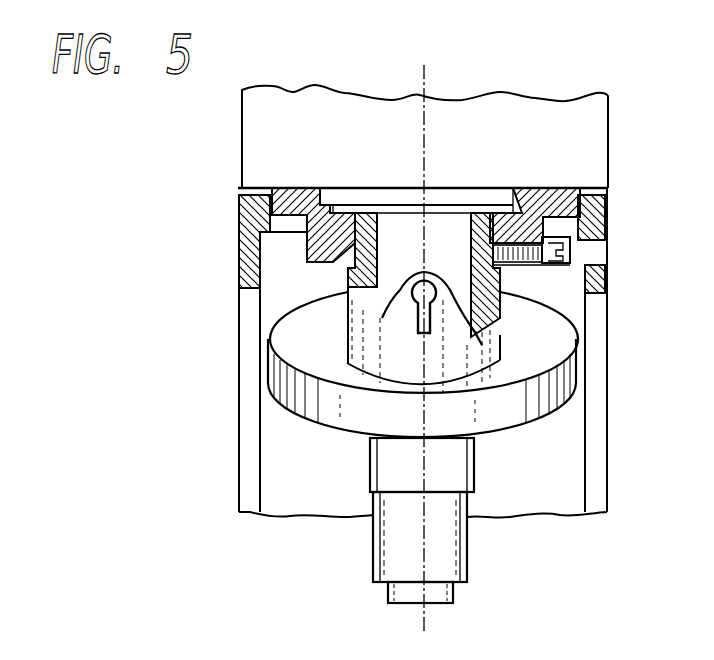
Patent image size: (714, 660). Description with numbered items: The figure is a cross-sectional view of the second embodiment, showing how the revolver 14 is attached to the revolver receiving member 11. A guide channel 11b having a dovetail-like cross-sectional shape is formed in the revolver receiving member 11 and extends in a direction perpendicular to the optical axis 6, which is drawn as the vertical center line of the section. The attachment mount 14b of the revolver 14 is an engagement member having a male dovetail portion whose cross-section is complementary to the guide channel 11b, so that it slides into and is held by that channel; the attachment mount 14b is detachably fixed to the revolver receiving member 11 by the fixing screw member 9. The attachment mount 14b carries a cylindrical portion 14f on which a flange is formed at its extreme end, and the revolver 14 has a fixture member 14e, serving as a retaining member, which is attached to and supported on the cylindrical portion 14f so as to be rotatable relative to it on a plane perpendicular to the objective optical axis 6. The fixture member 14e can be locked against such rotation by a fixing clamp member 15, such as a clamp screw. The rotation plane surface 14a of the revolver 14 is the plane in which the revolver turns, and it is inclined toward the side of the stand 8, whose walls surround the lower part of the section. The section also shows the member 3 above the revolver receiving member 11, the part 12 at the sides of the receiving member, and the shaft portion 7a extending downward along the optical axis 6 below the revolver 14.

The panel / mounting plate 3 is at (460, 100).
The optical axis 6 is at (415, 612).
The shaft 7a is at (457, 553).
The stand 8 is at (292, 500).
The fixing screw member 9 is at (571, 256).
The revolver receiving member 11 is at (553, 196).
The guide channel 11b is at (360, 201).
The hatched wall section / bushing 12 is at (248, 231).
The revolver 14 is at (306, 341).
The rotation plane surface 14a is at (558, 352).
The attachment mount 14b is at (482, 217).
The fixture member 14e is at (502, 333).
The cylindrical portion 14f is at (388, 287).
The fixing clamp member 15 is at (417, 331).